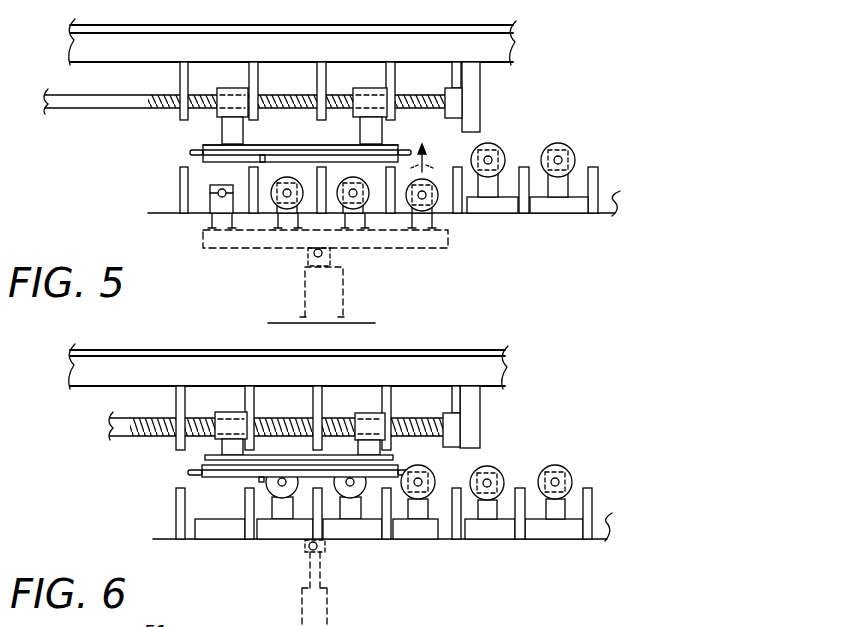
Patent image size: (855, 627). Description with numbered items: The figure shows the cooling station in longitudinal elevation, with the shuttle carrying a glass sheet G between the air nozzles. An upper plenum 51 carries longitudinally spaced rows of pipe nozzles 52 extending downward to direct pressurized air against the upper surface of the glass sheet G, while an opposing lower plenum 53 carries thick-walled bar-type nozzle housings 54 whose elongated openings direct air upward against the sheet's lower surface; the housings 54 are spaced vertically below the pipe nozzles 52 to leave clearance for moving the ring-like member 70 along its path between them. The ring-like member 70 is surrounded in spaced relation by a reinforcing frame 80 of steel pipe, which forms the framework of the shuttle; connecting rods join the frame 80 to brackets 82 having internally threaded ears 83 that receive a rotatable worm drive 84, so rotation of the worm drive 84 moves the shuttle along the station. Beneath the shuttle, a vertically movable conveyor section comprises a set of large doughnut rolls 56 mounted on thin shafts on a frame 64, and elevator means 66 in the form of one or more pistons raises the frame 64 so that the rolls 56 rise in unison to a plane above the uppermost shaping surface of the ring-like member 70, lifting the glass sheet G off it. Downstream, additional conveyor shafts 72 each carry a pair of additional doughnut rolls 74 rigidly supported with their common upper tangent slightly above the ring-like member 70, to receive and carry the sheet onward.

In FIG. 5, the upper plenum 51 is at (370, 45).
In FIG. 6, the upper plenum 51 is at (180, 360).
In FIG. 5, the pipe nozzles 52 is at (178, 72).
In FIG. 6, the pipe nozzles 52 is at (390, 402).
In FIG. 5, the lower plenum 53 is at (136, 250).
In FIG. 5, the bar-type nozzle housings 54 is at (178, 177).
In FIG. 6, the bar-type nozzle housings 54 is at (173, 500).
In FIG. 6, the doughnut rolls 56 is at (432, 475).
In FIG. 5, the frame 64 is at (370, 250).
In FIG. 6, the frame 64 is at (338, 532).
In FIG. 5, the elevator means 66 is at (305, 275).
In FIG. 6, the elevator means 66 is at (303, 617).
In FIG. 5, the ring-like member 70 is at (205, 145).
In FIG. 5, the additional conveyor shafts 72 is at (488, 160).
In FIG. 6, the additional conveyor shafts 72 is at (555, 482).
In FIG. 5, the additional doughnut rolls 74 is at (566, 144).
In FIG. 6, the additional doughnut rolls 74 is at (570, 470).
In FIG. 5, the reinforcing frame 80 is at (181, 153).
In FIG. 6, the reinforcing frame 80 is at (180, 474).
In FIG. 5, the brackets 82 is at (362, 130).
In FIG. 6, the brackets 82 is at (220, 445).
In FIG. 5, the internally threaded ears 83 is at (236, 88).
In FIG. 6, the internally threaded ears 83 is at (237, 412).
In FIG. 5, the worm drive 84 is at (78, 102).
In FIG. 6, the worm drive 84 is at (148, 418).
In FIG. 5, the glass sheet G is at (290, 145).
In FIG. 6, the glass sheet G is at (300, 452).